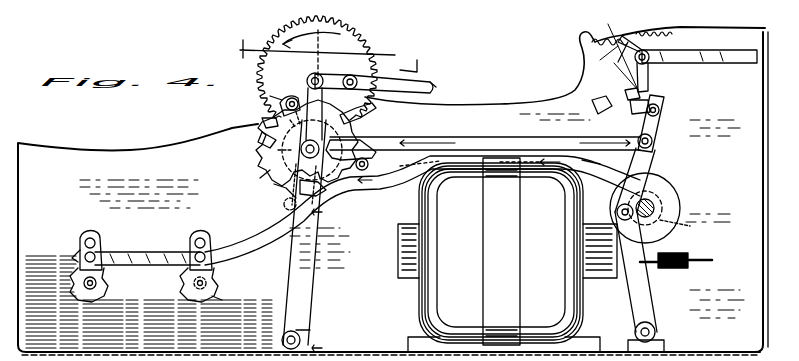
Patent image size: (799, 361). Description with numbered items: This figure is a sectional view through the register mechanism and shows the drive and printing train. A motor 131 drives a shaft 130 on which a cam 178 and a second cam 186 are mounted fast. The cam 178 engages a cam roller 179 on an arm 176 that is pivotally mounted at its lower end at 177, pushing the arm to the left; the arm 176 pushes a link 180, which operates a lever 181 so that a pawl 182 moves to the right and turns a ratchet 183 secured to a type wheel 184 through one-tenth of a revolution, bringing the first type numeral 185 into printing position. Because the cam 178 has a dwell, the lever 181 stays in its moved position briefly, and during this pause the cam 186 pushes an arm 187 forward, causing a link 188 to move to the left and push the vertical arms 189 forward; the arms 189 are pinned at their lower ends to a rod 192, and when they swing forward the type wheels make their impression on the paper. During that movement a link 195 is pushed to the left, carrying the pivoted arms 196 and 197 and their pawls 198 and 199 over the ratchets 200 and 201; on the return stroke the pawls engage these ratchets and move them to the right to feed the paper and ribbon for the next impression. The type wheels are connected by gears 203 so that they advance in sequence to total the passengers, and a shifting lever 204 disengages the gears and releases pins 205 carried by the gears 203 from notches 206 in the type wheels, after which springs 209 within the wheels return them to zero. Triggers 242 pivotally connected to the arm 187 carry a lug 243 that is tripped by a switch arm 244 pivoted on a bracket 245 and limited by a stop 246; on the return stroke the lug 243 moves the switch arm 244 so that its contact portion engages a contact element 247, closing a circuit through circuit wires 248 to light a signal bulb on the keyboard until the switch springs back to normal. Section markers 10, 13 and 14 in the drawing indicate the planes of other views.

The section line 10 is at (325, 280).
The section line 13 is at (320, 38).
The section line 14 is at (327, 61).
The shaft 130 is at (656, 203).
The motor 131 is at (436, 296).
The arm 176 is at (660, 172).
The pivot 177 is at (656, 332).
The cam 178 is at (685, 227).
The cam roller 179 is at (620, 206).
The link 180 is at (474, 168).
The lever 181 is at (270, 152).
The pawl 182 is at (308, 76).
The ratchet 183 is at (272, 186).
The type wheel 184 is at (258, 140).
The type numeral 185 is at (278, 100).
The cam 186 is at (660, 186).
The arm 187 is at (624, 160).
The link 188 is at (532, 135).
The vertical arms 189 is at (300, 262).
The rod 192 is at (300, 336).
The link 195 is at (162, 240).
The arm 196 is at (72, 252).
The arm 197 is at (222, 287).
The pawl 198 is at (98, 234).
The pawl 199 is at (262, 240).
The ratchet 200 is at (106, 288).
The ratchet 201 is at (222, 300).
The gear 203 is at (356, 48).
The shifting lever 204 is at (435, 90).
The pin 205 is at (357, 60).
The notch 206 is at (278, 110).
The spring 209 is at (266, 122).
The trigger 242 is at (611, 99).
The lug 243 is at (662, 104).
The switch arm 244 is at (652, 84).
The bracket 245 is at (700, 55).
The stop 246 is at (639, 102).
The contact element 247 is at (607, 51).
The circuit wires 248 is at (582, 56).